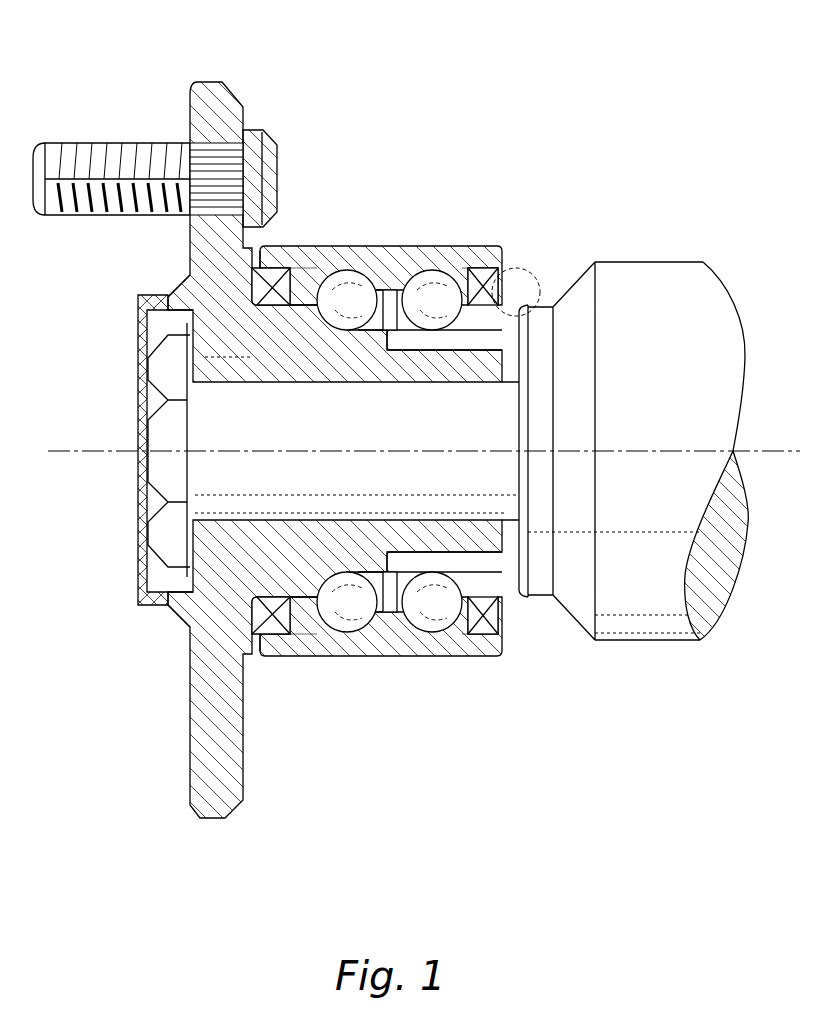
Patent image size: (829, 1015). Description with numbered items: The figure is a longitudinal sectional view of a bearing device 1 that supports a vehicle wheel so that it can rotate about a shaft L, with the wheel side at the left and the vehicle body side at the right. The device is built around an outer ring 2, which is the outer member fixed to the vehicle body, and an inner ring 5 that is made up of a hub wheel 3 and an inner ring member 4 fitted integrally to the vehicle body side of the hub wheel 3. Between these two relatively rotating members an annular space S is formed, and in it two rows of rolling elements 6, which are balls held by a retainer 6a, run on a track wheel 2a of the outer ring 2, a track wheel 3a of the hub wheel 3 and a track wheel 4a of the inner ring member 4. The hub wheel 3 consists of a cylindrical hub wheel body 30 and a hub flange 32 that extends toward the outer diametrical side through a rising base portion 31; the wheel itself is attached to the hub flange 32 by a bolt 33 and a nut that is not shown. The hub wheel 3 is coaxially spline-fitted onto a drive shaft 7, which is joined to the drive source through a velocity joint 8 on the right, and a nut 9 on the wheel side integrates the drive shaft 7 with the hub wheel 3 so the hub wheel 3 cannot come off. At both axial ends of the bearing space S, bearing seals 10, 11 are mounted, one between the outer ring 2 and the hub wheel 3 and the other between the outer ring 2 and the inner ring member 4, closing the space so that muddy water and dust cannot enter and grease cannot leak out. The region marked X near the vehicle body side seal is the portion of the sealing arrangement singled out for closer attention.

The bearing device 1 is at (483, 76).
The outer ring 2 is at (390, 246).
The track wheel of the outer ring 2a is at (350, 268).
The hub wheel 3 is at (190, 353).
The track wheel of the hub wheel 3a is at (330, 612).
The inner ring member 4 is at (330, 463).
The track wheel of the inner ring member 4a is at (455, 612).
The inner ring 5 is at (202, 451).
The rolling elements 6 is at (445, 270).
The retainer 6a is at (340, 270).
The drive shaft 7 is at (182, 620).
The velocity joint 8 is at (670, 640).
The nut 9 is at (153, 467).
The bearing seal 10 is at (262, 250).
The bearing seal 11 is at (485, 268).
The hub wheel body 30 is at (345, 535).
The rising base portion 31 is at (272, 482).
The hub flange 32 is at (192, 810).
The bolt 33 is at (255, 128).
The annular space S is at (391, 615).
The enlarged portion X is at (513, 270).
The shaft L is at (771, 450).